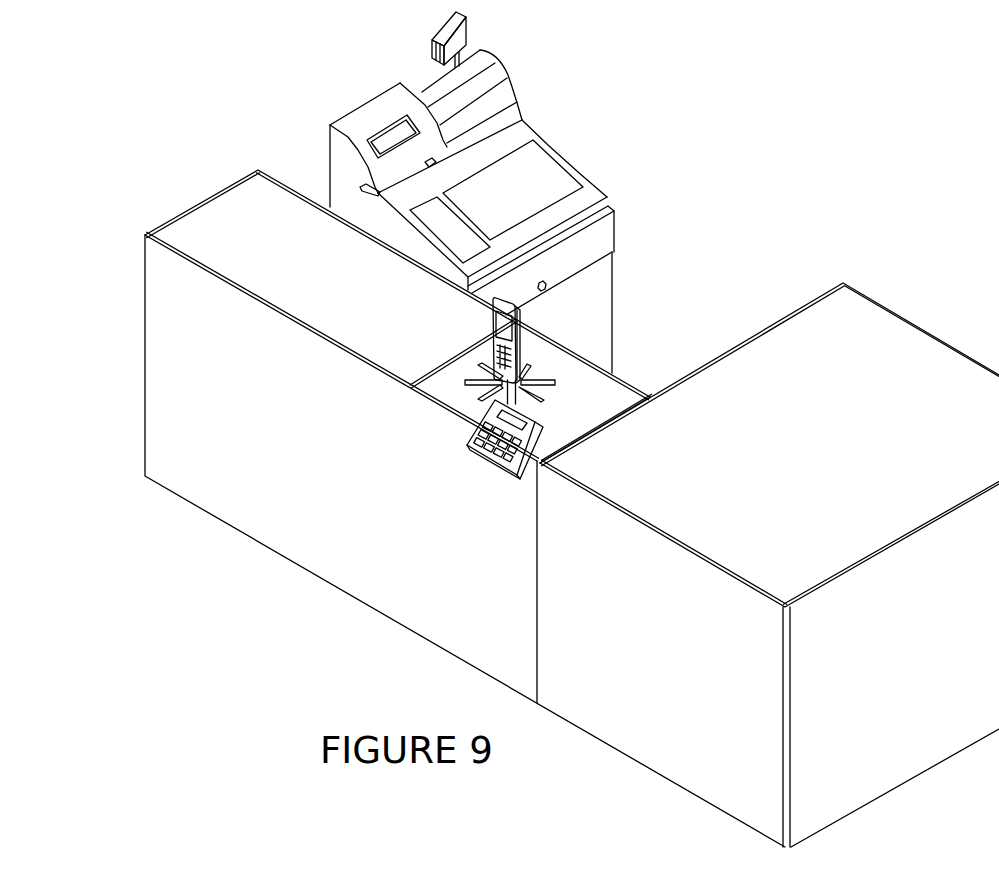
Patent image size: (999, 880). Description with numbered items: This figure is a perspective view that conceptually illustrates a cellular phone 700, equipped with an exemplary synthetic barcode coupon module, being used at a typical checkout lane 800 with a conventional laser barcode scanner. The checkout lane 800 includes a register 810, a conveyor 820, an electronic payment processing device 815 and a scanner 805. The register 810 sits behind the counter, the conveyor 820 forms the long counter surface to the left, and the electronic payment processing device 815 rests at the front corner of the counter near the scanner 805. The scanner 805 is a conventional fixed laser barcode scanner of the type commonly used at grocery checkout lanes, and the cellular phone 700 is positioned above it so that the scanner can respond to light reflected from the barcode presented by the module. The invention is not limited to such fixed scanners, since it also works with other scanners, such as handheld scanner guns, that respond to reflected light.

The cellular phone 700 is at (493, 322).
The checkout lane 800 is at (692, 298).
The scanner 805 is at (525, 375).
The register 810 is at (563, 156).
The electronic payment processing device 815 is at (470, 457).
The conveyor 820 is at (282, 218).